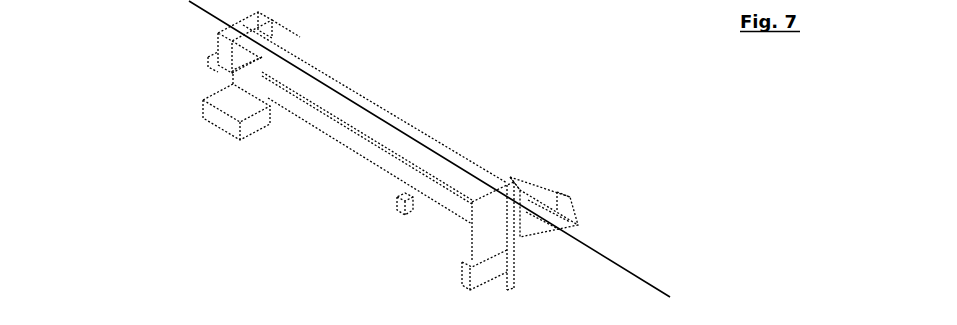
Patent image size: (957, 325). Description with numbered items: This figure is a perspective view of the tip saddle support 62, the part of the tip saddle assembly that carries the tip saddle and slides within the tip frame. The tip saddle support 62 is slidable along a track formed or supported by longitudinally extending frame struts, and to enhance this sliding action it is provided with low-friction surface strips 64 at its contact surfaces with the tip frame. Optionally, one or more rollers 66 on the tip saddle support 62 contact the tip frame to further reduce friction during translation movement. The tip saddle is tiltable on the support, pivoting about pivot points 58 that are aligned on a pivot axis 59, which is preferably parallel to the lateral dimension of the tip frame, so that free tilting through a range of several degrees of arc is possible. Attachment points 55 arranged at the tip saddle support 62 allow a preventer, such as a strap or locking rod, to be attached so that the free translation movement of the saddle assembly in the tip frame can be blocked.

The tip saddle support 62 is at (517, 43).
The roller 66 is at (212, 118).
The attachment point 55 is at (398, 208).
The pivot point 58 is at (545, 214).
The low-friction surface strip 64 is at (514, 245).
The pivot axis 59 is at (657, 290).